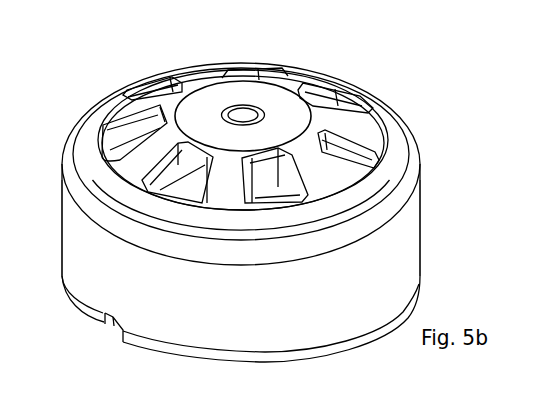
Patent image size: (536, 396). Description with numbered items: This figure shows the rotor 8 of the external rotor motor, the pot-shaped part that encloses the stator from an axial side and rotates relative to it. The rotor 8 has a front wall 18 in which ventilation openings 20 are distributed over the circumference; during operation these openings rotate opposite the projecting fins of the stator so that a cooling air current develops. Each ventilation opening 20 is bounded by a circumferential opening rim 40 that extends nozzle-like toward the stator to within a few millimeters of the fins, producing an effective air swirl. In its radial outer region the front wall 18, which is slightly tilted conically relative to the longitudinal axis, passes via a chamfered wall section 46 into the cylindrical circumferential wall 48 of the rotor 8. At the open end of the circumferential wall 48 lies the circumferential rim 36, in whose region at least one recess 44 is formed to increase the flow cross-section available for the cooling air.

The rotor 8 is at (445, 215).
The front wall 18 is at (316, 75).
The ventilation openings 20 is at (116, 150).
The circumferential rim 36 is at (143, 340).
The opening rim 40 is at (180, 88).
The recess 44 is at (112, 329).
The chamfered wall section 46 is at (378, 196).
The circumferential wall 48 is at (400, 243).